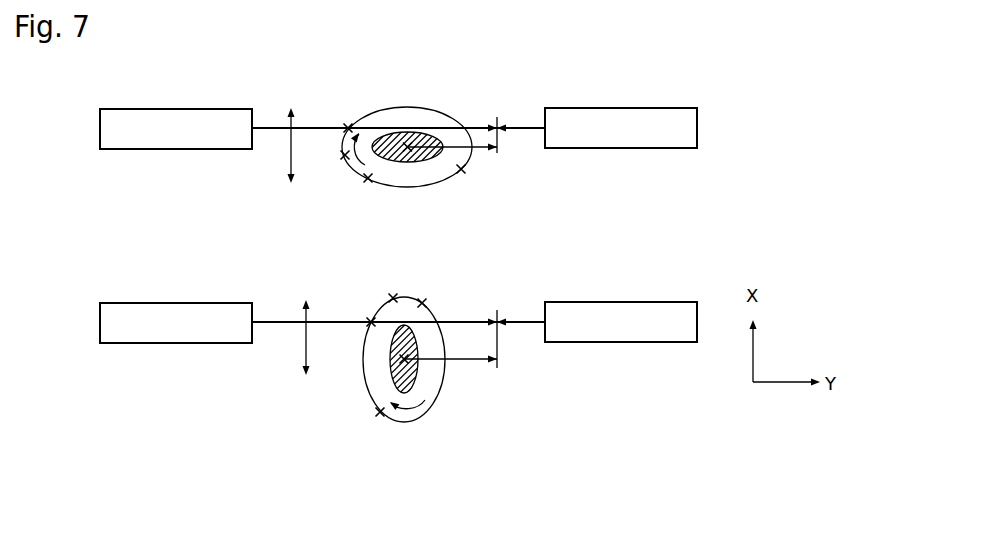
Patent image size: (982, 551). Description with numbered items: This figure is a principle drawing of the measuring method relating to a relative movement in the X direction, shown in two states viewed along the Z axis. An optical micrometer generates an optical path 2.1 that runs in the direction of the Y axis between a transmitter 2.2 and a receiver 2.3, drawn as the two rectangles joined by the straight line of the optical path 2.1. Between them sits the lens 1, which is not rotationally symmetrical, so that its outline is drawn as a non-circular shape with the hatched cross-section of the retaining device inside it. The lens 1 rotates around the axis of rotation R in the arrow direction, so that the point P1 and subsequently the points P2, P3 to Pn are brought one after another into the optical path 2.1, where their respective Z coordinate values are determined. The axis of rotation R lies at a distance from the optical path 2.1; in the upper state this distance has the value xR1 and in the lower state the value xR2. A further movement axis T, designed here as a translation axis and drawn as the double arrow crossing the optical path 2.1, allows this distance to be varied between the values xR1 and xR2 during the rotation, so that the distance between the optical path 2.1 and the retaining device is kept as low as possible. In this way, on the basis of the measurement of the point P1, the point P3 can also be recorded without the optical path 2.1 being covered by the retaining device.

The lens 1 is at (446, 120).
The optical path 2.1 is at (276, 128).
The transmitter 2.2 is at (613, 130).
The receiver 2.3 is at (160, 130).
The movement axis T is at (290, 159).
The axis of rotation R is at (409, 144).
The point P1 is at (348, 126).
The point P2 is at (345, 156).
The point P3 is at (368, 179).
The point Pn is at (461, 171).
The distance value xR1 is at (499, 136).
The distance value xR2 is at (499, 340).